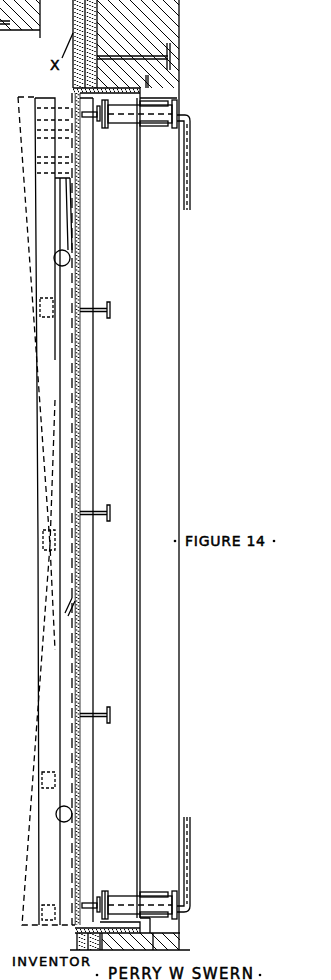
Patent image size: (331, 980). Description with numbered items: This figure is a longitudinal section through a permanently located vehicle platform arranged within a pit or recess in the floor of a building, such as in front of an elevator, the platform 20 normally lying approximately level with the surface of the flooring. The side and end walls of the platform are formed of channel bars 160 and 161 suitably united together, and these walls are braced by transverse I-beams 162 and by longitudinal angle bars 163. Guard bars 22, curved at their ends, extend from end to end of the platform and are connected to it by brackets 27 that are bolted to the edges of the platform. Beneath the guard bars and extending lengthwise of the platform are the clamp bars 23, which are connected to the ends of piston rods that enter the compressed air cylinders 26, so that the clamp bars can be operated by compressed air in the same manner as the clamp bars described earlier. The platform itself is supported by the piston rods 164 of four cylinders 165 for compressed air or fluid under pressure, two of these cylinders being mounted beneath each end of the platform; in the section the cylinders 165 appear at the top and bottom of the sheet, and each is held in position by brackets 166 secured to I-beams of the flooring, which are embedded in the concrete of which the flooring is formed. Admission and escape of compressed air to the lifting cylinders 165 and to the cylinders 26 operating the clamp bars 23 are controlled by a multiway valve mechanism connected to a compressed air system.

The platform 20 is at (78, 445).
The guard bars 22 is at (68, 222).
The clamp bars 23 is at (43, 210).
The compressed air cylinders 26 is at (77, 242).
The brackets 27 is at (45, 315).
The channel bars 160 is at (120, 258).
The channel bars 161 is at (125, 104).
The transverse I-beams 162 is at (93, 113).
The longitudinal angle bars 163 is at (88, 617).
The piston rods 164 is at (153, 117).
The cylinders 165 is at (179, 108).
The brackets 166 is at (160, 126).